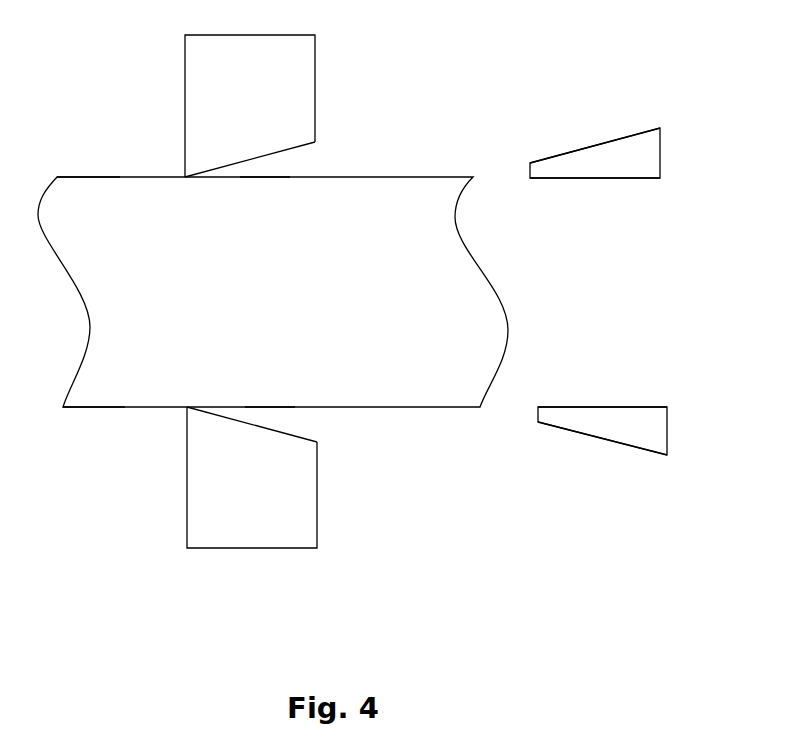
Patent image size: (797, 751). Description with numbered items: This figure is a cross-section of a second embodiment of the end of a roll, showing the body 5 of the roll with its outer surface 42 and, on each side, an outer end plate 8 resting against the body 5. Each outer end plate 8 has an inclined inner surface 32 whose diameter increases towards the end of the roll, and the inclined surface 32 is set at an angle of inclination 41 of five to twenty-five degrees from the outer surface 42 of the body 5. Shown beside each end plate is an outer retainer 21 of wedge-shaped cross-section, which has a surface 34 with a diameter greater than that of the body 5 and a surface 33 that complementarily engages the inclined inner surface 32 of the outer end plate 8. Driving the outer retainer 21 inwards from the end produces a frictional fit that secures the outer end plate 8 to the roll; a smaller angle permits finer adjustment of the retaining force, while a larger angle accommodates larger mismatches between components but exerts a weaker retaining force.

The body 5 is at (86, 250).
The outer end plate 8 is at (236, 94).
The outer retainer 21 is at (684, 163).
The inclined inner surface 32 is at (222, 158).
The surface 33 is at (577, 150).
The surface 34 is at (573, 178).
The angle of inclination 41 is at (264, 177).
The outer surface 42 is at (93, 177).